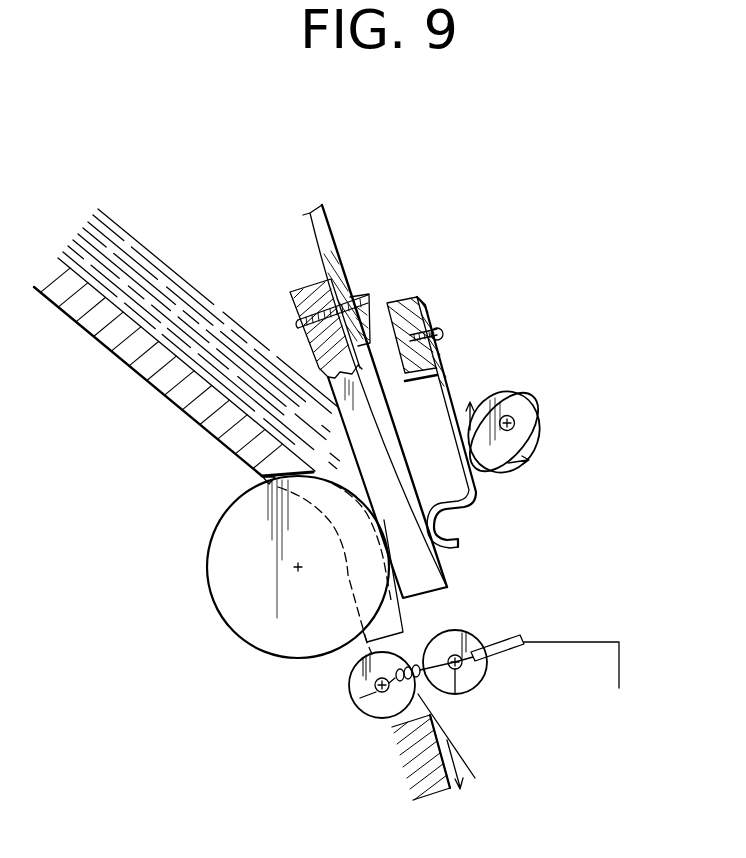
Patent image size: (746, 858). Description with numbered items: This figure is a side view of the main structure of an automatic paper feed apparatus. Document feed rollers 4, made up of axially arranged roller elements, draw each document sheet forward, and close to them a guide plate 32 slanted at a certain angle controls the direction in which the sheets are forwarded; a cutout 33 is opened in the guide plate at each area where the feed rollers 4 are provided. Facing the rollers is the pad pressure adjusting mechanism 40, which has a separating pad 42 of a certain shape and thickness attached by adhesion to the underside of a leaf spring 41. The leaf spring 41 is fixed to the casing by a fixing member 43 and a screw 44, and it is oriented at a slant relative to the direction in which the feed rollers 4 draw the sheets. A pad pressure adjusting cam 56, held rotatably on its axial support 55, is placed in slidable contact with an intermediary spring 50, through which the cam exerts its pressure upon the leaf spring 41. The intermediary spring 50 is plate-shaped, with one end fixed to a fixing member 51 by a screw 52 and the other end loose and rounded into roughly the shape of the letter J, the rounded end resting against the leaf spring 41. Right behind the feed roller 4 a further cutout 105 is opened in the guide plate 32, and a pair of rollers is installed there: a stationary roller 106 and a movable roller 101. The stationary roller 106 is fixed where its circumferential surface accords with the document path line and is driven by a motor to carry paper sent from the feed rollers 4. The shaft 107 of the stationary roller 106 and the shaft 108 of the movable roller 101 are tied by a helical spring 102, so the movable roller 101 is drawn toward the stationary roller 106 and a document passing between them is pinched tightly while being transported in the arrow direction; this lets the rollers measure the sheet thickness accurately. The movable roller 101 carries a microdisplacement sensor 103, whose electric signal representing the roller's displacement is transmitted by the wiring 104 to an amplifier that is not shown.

The document feed rollers 4 is at (210, 601).
The guide plate 32 is at (108, 350).
The cutout 33 is at (266, 480).
The pad pressure adjusting mechanism 40 is at (382, 288).
The leaf spring 41 is at (448, 566).
The separating pad 42 is at (412, 598).
The fixing member 43 is at (315, 236).
The screw 44 is at (296, 292).
The intermediary spring 50 is at (447, 386).
The fixing member 51 is at (419, 381).
The screw 52 is at (432, 331).
The axial support 55 is at (514, 427).
The pad pressure adjusting cam 56 is at (540, 422).
The movable roller 101 is at (470, 680).
The helical spring 102 is at (468, 749).
The microdisplacement sensor 103 is at (498, 636).
The wiring 104 is at (622, 684).
The cutout 105 is at (354, 659).
The stationary roller 106 is at (360, 698).
The shaft 107 is at (378, 691).
The shaft 108 is at (455, 694).